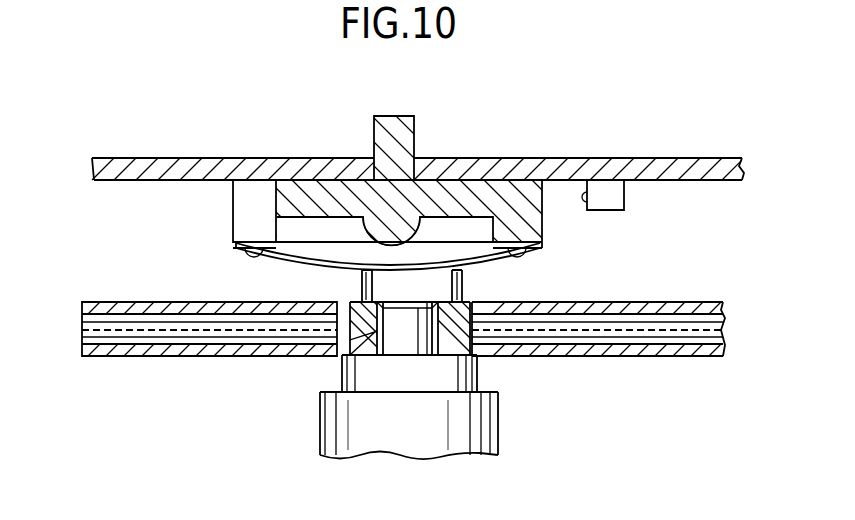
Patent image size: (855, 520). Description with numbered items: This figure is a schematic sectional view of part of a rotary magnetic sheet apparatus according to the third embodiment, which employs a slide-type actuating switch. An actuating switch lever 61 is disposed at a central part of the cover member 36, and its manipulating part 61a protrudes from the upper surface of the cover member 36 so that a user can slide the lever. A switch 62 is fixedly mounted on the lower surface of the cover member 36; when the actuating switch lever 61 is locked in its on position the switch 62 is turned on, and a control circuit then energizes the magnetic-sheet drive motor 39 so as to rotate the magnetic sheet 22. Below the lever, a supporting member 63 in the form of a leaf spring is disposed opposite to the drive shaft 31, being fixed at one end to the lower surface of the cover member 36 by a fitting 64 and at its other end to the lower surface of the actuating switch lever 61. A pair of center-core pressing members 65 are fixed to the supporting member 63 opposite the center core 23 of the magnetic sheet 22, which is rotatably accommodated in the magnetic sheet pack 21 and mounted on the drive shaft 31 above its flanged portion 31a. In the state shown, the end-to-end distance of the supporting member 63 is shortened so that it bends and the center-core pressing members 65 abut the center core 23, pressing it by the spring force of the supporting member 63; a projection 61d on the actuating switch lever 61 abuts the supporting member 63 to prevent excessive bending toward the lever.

The cover member 36 is at (673, 167).
The actuating switch lever 61 is at (418, 138).
The manipulating part 61a is at (381, 124).
The projection 61d is at (377, 233).
The switch 62 is at (613, 200).
The supporting member 63 is at (412, 262).
The fitting 64 is at (233, 208).
The center-core pressing members 65 is at (362, 278).
The magnetic sheet pack 21 is at (682, 302).
The magnetic sheet 22 is at (568, 333).
The center core 23 is at (460, 343).
The drive shaft 31 is at (345, 352).
The flanged portion 31a is at (352, 372).
The magnetic-sheet drive motor 39 is at (478, 438).